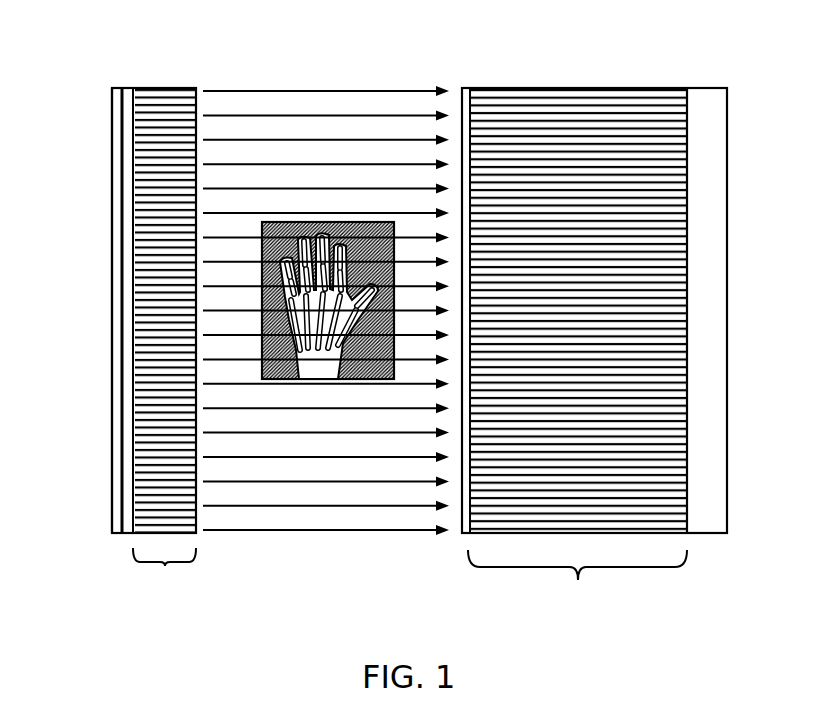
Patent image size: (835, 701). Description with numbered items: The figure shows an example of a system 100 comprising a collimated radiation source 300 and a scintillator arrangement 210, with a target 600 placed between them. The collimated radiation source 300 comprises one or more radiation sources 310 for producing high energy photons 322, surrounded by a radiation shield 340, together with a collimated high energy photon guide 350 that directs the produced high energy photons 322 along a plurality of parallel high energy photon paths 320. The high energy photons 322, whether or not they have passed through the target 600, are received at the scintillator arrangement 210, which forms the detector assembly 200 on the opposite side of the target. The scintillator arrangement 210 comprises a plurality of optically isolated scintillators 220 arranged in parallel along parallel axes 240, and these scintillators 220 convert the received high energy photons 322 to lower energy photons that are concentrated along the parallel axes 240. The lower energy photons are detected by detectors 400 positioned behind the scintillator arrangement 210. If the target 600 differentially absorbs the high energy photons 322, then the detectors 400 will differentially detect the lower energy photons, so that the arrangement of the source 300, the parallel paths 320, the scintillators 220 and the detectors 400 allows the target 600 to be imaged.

The system 100 is at (624, 321).
The thermal coherence scintillator (TCS) detector 200 is at (624, 330).
The scintillator arrangement 210 is at (565, 110).
The optically isolated scintillators 220 is at (620, 93).
The parallel axes 240 is at (484, 93).
The collimated radiation source 300 is at (124, 318).
The radiation sources 310 is at (115, 512).
The parallel high energy photon paths 320 is at (326, 347).
The high energy photons 322 is at (262, 532).
The radiation shield 340 is at (111, 372).
The collimated high energy photon guide 350 is at (160, 515).
The detectors 400 is at (710, 178).
The target 600 is at (345, 379).